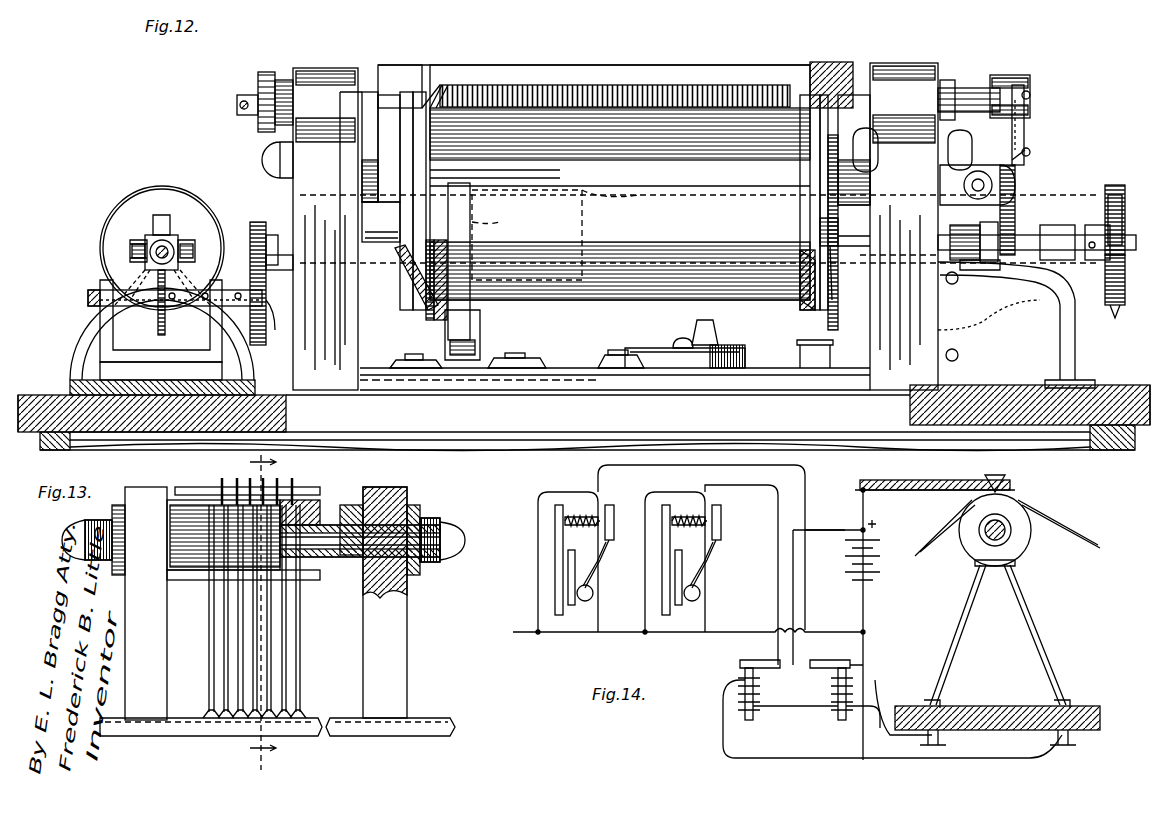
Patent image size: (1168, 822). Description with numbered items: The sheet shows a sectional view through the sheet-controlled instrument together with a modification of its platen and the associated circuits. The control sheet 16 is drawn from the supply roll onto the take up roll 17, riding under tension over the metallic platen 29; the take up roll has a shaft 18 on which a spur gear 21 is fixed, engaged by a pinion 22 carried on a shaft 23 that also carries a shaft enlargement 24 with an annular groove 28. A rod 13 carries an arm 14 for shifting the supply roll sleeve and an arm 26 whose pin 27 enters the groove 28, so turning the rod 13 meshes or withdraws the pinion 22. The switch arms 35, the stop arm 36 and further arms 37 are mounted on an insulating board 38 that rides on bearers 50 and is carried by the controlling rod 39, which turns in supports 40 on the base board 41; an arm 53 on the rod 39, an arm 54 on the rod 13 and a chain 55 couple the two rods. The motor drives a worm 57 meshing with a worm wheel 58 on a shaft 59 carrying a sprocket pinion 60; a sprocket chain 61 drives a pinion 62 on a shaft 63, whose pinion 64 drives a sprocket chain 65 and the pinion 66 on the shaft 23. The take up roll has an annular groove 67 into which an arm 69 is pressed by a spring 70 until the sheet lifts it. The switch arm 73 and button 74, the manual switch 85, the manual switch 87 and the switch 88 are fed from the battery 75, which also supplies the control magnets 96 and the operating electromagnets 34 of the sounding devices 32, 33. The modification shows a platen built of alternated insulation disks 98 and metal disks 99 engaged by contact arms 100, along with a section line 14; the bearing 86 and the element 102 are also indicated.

In FIG. 12, the rod 13 is at (979, 178).
In FIG. 13, the arm 14 is at (251, 611).
In FIG. 12, the control sheet 16 is at (620, 182).
In FIG. 12, the take up roll 17 is at (410, 285).
In FIG. 12, the shaft 18 is at (381, 251).
In FIG. 12, the spur gear 21 is at (832, 322).
In FIG. 12, the pinion 22 is at (822, 236).
In FIG. 12, the shaft 23 is at (1035, 285).
In FIG. 12, the shaft enlargement 24 is at (1040, 235).
In FIG. 12, the arm 26 is at (1015, 200).
In FIG. 12, the pin 27 is at (985, 270).
In FIG. 12, the annular groove 28 is at (982, 258).
In FIG. 12, the metallic platen 29 is at (382, 170).
In FIG. 14, the sounding device 32 is at (572, 604).
In FIG. 14, the sounding device 33 is at (680, 604).
In FIG. 14, the operating electromagnet 34 is at (585, 515).
In FIG. 12, the switch arm 35 is at (500, 92).
In FIG. 12, the switch arm 36 is at (448, 106).
In FIG. 12, the switch arm 37 is at (442, 86).
In FIG. 12, the insulating board 38 is at (832, 75).
In FIG. 12, the controlling rod 39 is at (244, 100).
In FIG. 12, the supports 40 is at (325, 72).
In FIG. 12, the base board 41 is at (975, 392).
In FIG. 12, the bearers 50 is at (412, 128).
In FIG. 12, the arm 53 is at (1032, 95).
In FIG. 12, the arm 54 is at (1025, 152).
In FIG. 12, the chain 55 is at (1026, 128).
In FIG. 12, the worm 57 is at (172, 242).
In FIG. 12, the worm wheel 58 is at (162, 325).
In FIG. 12, the shaft 59 is at (88, 298).
In FIG. 12, the sprocket pinion 60 is at (262, 345).
In FIG. 12, the sprocket chain 61 is at (266, 310).
In FIG. 12, the pinion 62 is at (258, 224).
In FIG. 12, the shaft 63 is at (878, 258).
In FIG. 12, the pinion 64 is at (1114, 320).
In FIG. 12, the sprocket chain 65 is at (1122, 215).
In FIG. 12, the pinion 66 is at (1118, 185).
In FIG. 12, the annular groove 67 is at (556, 235).
In FIG. 12, the arm 69 is at (462, 300).
In FIG. 12, the spring 70 is at (426, 320).
In FIG. 12, the switch arm 73 is at (710, 345).
In FIG. 12, the button 74 is at (648, 350).
In FIG. 14, the battery 75 is at (880, 568).
In FIG. 12, the manual switch 85 is at (730, 350).
In FIG. 12, the lever 86 is at (722, 355).
In FIG. 12, the manual switch 87 is at (525, 352).
In FIG. 12, the switch 88 is at (416, 355).
In FIG. 14, the control magnet 96 is at (828, 694).
In FIG. 13, the insulation disk 98 is at (235, 515).
In FIG. 14, the insulation disk 98 is at (996, 572).
In FIG. 13, the metal disk 99 is at (222, 532).
In FIG. 14, the metal disk 99 is at (1022, 540).
In FIG. 13, the contact arm 100 is at (292, 485).
In FIG. 14, the contact arm 100 is at (958, 480).
In FIG. 12, the arm 102 is at (138, 243).